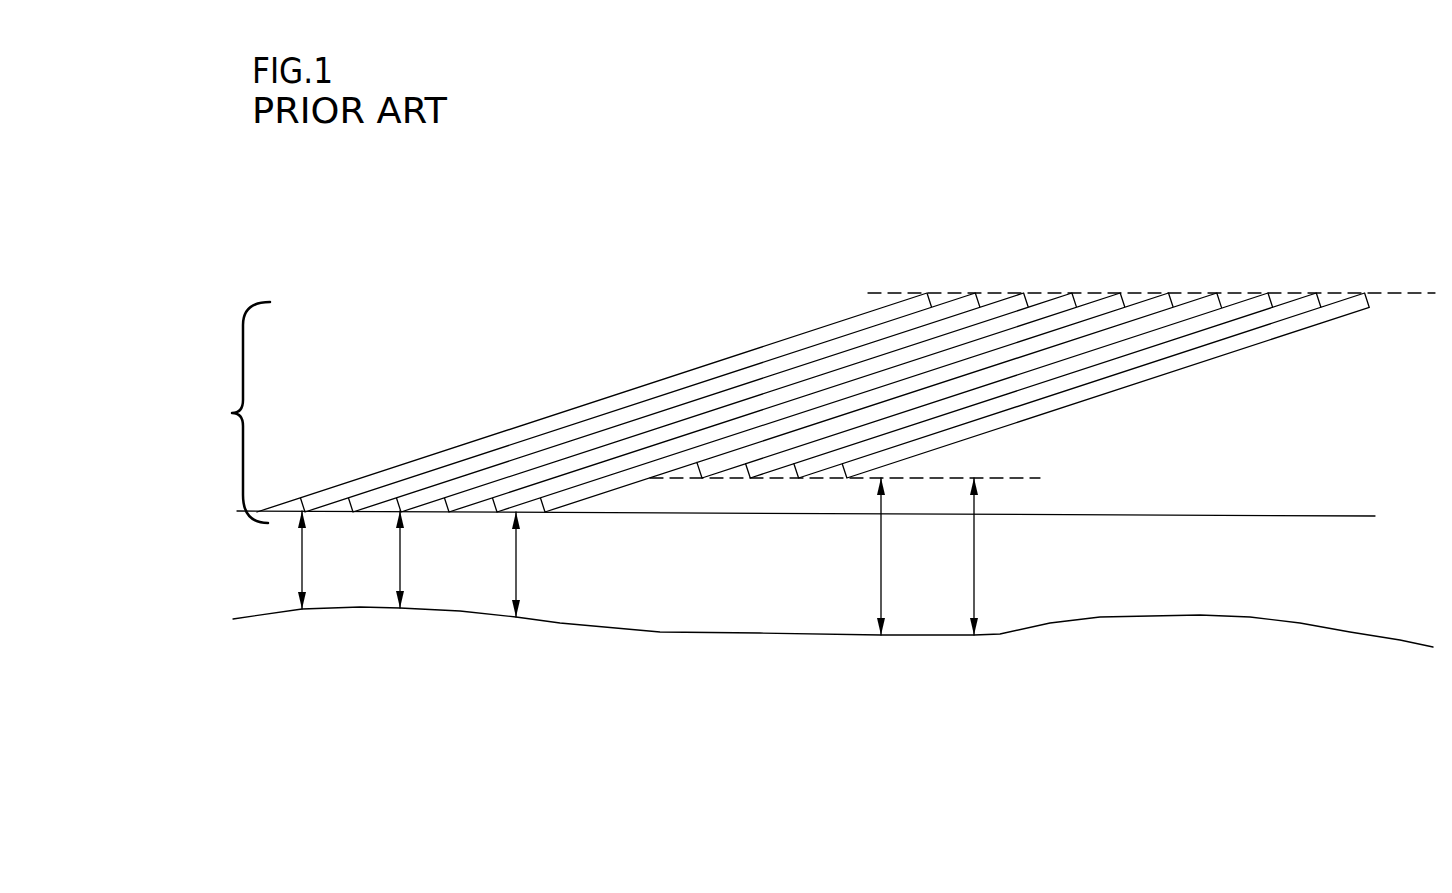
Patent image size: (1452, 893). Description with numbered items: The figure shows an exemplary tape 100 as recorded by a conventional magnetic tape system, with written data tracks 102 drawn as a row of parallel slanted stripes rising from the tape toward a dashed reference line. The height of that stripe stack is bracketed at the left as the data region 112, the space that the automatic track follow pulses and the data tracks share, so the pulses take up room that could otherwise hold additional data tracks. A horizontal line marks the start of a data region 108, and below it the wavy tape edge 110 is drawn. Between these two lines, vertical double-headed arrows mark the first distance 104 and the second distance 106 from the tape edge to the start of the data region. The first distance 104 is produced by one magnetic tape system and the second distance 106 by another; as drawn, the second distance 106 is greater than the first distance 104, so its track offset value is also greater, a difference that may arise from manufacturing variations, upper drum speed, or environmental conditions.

The tape 100 is at (846, 321).
The data tracks 102 is at (1237, 362).
The distance Δd1 104 is at (247, 577).
The distance Δd2 106 is at (987, 545).
The data region 108 is at (1363, 512).
The medium surface 110 is at (662, 647).
The data region 112 is at (223, 412).